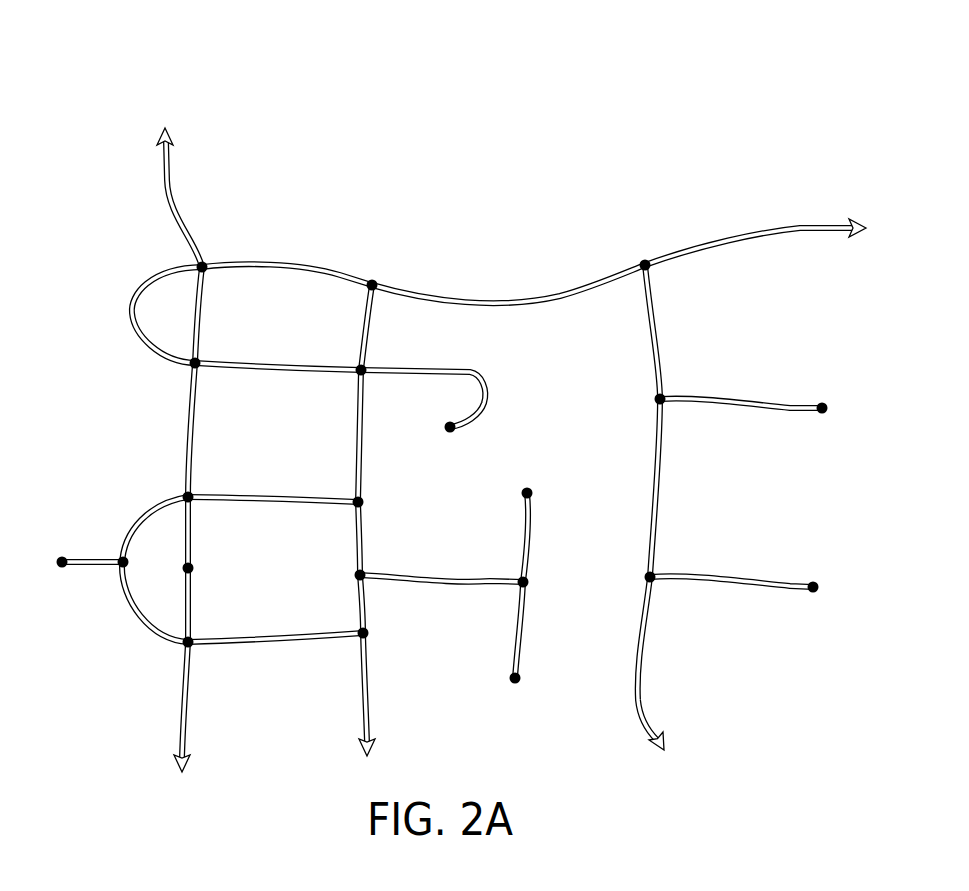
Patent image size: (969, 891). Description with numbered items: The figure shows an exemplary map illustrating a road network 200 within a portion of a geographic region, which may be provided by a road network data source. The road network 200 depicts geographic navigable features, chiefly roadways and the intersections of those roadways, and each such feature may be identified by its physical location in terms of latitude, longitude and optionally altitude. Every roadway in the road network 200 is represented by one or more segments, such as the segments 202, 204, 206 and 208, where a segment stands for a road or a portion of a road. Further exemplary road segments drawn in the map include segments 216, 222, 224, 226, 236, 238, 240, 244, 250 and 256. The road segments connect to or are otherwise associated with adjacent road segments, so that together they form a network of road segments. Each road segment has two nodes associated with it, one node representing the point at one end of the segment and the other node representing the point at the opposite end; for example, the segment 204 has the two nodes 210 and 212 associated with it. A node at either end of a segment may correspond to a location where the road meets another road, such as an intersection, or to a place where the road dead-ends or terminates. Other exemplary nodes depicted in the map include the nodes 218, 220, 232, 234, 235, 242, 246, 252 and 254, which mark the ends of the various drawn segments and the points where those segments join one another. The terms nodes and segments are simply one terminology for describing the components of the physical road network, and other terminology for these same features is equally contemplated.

The road network 200 is at (294, 118).
The segment 202 is at (280, 262).
The segment 204 is at (605, 283).
The segment 206 is at (770, 233).
The segment 208 is at (163, 190).
The node 210 is at (375, 283).
The node 212 is at (650, 270).
The road segment 216 is at (480, 372).
The node 218 is at (449, 432).
The node 220 is at (366, 368).
The road segment 222 is at (364, 330).
The road segment 224 is at (272, 372).
The road segment 226 is at (364, 410).
The node 232 is at (359, 573).
The node 234 is at (528, 580).
The node 235 is at (352, 500).
The road segment 236 is at (362, 530).
The road segment 238 is at (366, 616).
The road segment 240 is at (524, 640).
The node 242 is at (518, 682).
The road segment 244 is at (525, 520).
The node 246 is at (530, 492).
The road segment 250 is at (130, 313).
The node 252 is at (188, 368).
The node 254 is at (203, 262).
The road segment 256 is at (200, 300).